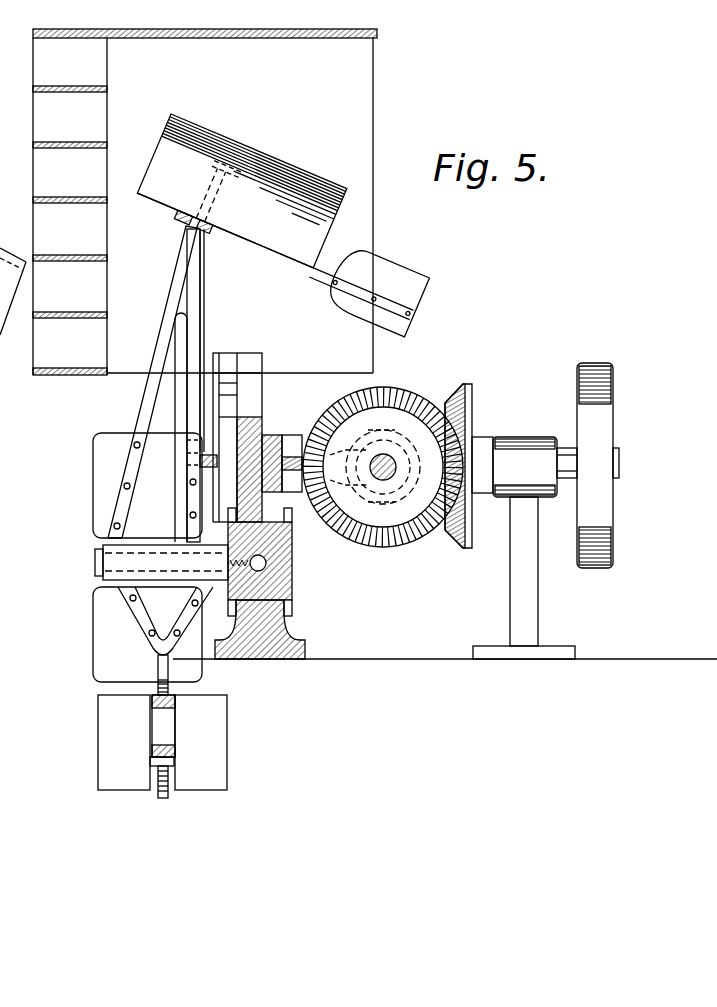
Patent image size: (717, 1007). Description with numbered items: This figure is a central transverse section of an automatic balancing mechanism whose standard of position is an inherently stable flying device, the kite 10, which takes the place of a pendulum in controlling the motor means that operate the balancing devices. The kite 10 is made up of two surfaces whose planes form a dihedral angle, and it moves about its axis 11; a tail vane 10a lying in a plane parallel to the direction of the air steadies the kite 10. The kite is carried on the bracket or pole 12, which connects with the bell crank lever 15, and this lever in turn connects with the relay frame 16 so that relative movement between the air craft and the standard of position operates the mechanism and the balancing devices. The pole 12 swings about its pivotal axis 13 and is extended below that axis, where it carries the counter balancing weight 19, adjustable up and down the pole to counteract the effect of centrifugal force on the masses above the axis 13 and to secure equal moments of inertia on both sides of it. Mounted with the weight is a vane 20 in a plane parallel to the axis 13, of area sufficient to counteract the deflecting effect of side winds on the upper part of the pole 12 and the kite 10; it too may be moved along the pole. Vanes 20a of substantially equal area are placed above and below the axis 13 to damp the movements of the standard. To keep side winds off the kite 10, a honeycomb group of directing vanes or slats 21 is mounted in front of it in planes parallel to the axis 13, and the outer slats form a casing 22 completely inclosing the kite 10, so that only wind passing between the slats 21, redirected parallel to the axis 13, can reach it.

The kite 10 is at (290, 217).
The tail vane 10a is at (410, 288).
The axis 11 is at (257, 158).
The bracket or pole 12 is at (140, 420).
The pivotal axis 13 is at (96, 572).
The bell crank lever 15 is at (238, 395).
The relay frame 16 is at (226, 462).
The counter balancing weight 19 is at (157, 692).
The vane 20 is at (207, 731).
The vanes 20a is at (100, 482).
The directing vanes or slats 21 is at (47, 146).
The casing 22 is at (270, 38).